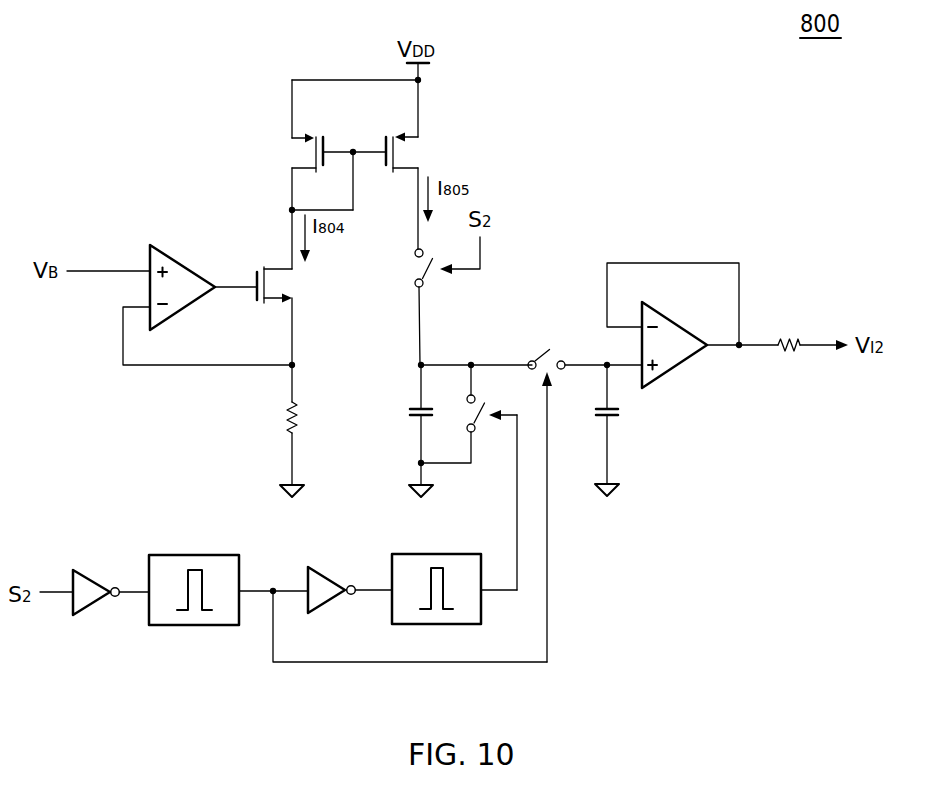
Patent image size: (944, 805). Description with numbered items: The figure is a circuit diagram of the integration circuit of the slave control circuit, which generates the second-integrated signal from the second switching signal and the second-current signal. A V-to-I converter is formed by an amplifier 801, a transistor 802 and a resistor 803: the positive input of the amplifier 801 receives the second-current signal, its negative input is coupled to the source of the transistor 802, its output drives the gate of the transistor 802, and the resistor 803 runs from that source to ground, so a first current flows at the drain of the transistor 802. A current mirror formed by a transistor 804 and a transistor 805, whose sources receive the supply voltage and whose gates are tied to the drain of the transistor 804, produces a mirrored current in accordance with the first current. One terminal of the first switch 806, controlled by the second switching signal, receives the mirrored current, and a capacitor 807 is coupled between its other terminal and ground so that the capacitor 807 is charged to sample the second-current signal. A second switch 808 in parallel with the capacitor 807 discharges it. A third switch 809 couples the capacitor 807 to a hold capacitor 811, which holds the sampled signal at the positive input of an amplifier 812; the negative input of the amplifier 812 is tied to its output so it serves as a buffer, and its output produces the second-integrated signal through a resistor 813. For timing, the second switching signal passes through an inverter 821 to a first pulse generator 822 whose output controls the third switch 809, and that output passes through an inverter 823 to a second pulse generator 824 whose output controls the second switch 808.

The amplifier 801 is at (207, 302).
The transistor 802 is at (298, 316).
The resistor 803 is at (275, 431).
The transistor 804 is at (300, 172).
The transistor 805 is at (408, 191).
The first switch 806 is at (403, 307).
The capacitor 807 is at (400, 431).
The second switch 808 is at (471, 477).
The third switch 809 is at (567, 491).
The hold capacitor 811 is at (626, 430).
The amplifier 812 is at (692, 325).
The resistor 813 is at (809, 361).
The inverter 821 is at (111, 584).
The first pulse generator 822 is at (228, 575).
The inverter 823 is at (350, 581).
The second pulse generator 824 is at (454, 575).